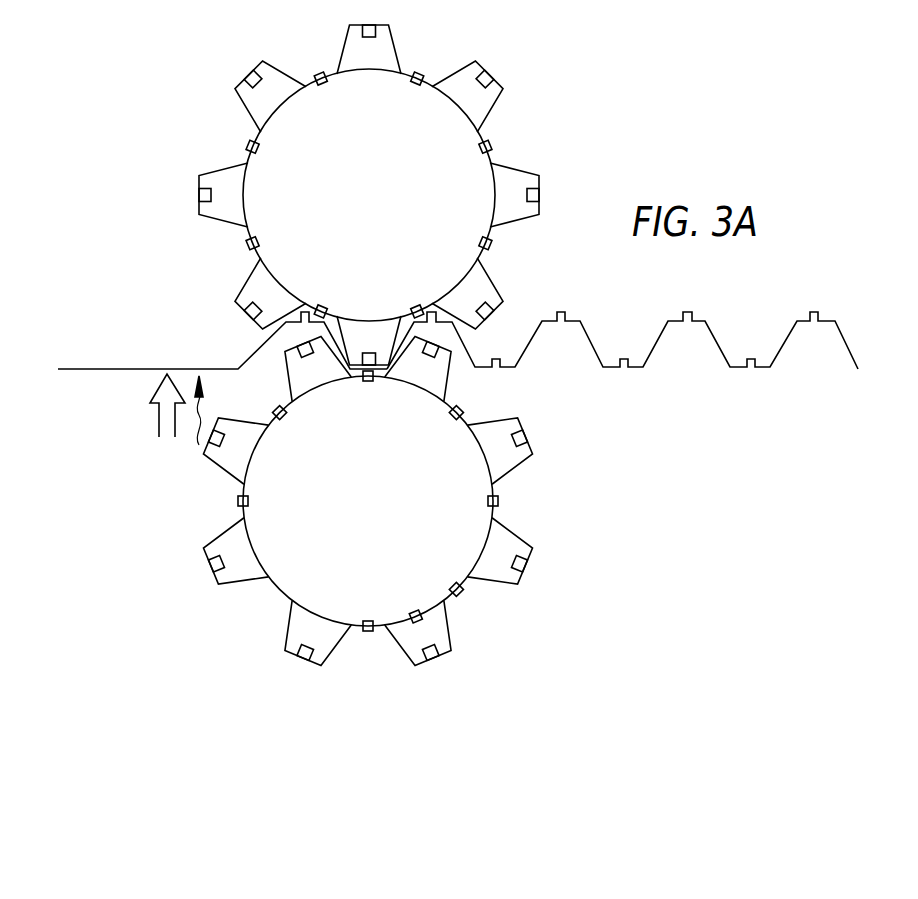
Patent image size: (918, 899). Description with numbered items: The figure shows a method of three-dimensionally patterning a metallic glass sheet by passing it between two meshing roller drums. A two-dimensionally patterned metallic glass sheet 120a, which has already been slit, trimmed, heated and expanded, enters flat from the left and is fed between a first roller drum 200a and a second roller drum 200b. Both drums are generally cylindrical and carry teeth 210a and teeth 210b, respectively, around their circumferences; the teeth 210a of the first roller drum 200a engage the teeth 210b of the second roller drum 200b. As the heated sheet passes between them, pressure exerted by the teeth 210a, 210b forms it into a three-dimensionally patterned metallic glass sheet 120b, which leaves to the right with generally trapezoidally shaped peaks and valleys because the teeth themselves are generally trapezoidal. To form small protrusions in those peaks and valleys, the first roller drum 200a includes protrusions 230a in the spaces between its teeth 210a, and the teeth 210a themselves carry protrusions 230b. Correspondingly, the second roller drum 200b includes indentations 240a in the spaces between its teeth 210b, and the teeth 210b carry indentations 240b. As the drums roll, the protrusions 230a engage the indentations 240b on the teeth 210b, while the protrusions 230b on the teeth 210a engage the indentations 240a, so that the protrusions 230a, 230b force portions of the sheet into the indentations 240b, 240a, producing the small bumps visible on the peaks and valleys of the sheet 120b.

The two-dimensionally patterned metallic glass sheet 120a is at (150, 370).
The three-dimensionally patterned metallic glass sheet 120b is at (842, 338).
The first roller drum 200a is at (403, 501).
The second roller drum 200b is at (349, 189).
The teeth of the first roller drum 210a is at (289, 624).
The teeth of the second roller drum 210b is at (280, 71).
The protrusions in the spaces between the teeth 230a is at (456, 589).
The protrusions on the teeth 230b is at (526, 564).
The indentations in the spaces between the teeth 240a is at (408, 80).
The indentations on the teeth 240b is at (200, 193).